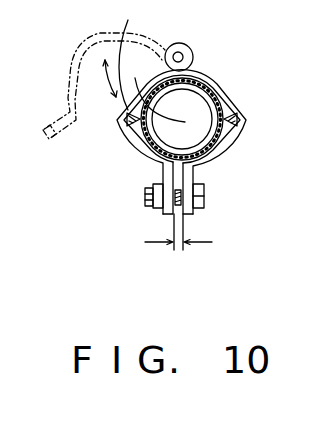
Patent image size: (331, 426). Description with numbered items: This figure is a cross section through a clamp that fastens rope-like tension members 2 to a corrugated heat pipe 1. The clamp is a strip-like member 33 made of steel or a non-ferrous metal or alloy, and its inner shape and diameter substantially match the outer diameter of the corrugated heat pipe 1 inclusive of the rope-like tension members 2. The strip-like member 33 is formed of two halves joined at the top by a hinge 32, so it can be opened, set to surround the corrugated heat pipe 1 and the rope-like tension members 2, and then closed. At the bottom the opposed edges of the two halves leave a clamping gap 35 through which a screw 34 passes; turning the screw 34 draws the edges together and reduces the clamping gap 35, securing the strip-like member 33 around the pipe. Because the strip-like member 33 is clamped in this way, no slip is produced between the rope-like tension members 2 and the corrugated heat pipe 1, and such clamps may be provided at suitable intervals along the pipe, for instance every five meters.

The corrugated heat pipe 1 is at (232, 138).
The rope-like tension members 2 is at (242, 121).
The hinge 32 is at (180, 57).
The strip-like member 33 is at (74, 66).
The screw 34 is at (204, 204).
The clamping gap 35 is at (179, 250).